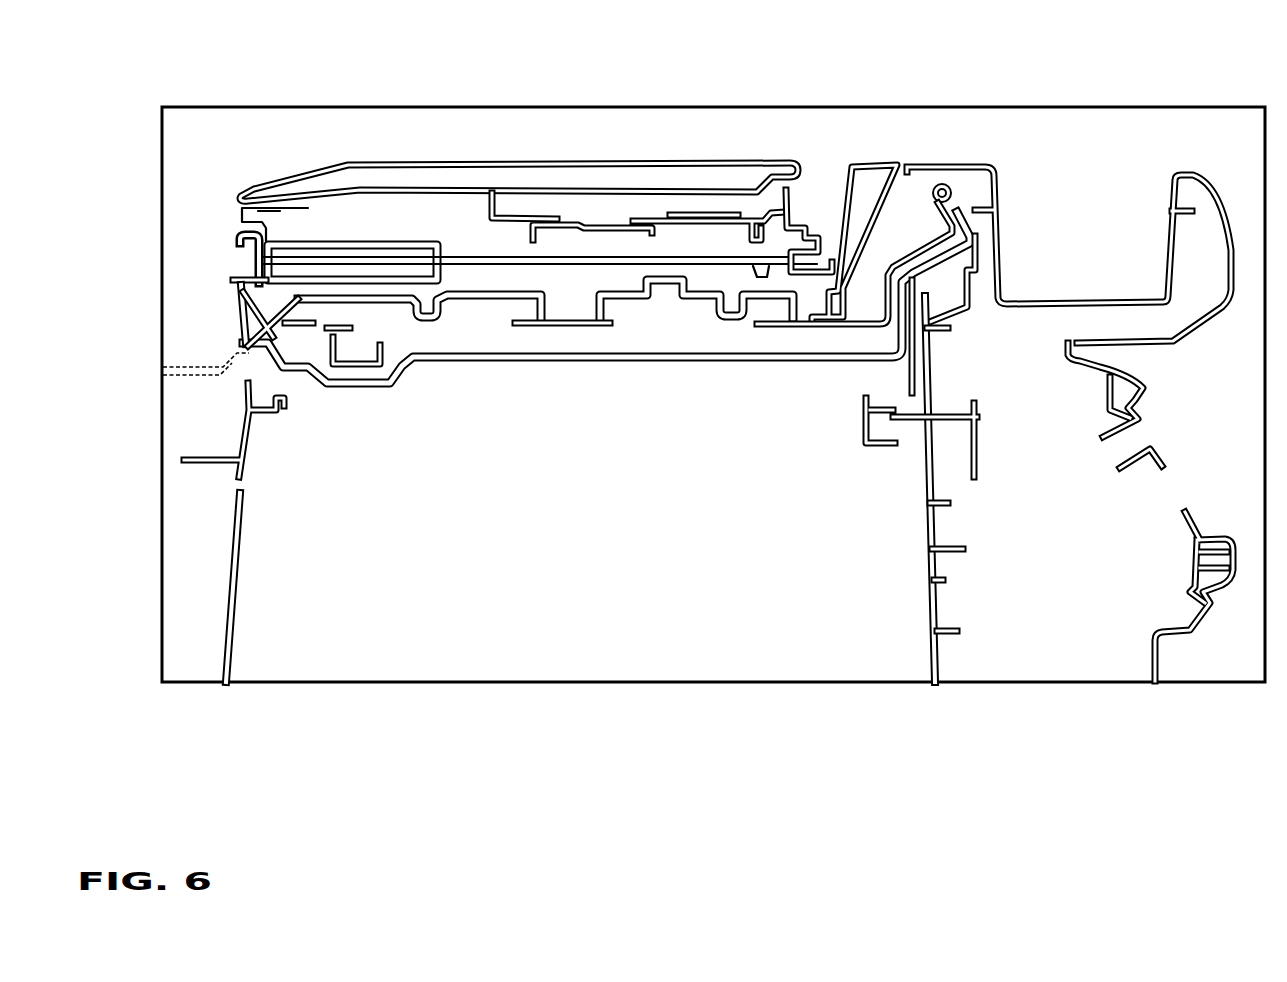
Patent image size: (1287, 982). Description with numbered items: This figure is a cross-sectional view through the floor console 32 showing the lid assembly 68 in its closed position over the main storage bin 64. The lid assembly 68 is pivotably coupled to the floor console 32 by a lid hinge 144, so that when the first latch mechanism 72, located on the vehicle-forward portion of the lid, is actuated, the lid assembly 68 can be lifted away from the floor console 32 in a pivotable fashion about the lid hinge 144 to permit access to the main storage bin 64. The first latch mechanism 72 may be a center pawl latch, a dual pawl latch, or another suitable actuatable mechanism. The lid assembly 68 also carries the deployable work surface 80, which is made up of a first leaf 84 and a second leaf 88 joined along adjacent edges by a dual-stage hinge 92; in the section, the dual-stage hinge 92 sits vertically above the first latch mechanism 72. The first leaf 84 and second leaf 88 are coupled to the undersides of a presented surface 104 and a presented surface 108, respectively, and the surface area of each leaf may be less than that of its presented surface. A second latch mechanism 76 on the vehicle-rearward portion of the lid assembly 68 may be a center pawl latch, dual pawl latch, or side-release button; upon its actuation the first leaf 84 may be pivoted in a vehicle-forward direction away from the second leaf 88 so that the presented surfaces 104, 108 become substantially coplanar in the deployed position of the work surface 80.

The floor console 32 is at (125, 130).
The main storage bin 64 is at (582, 526).
The lid assembly 68 is at (414, 150).
The first latch mechanism 72 is at (227, 323).
The second latch mechanism 76 is at (806, 212).
The work surface 80 is at (667, 238).
The first leaf 84 is at (308, 243).
The second leaf 88 is at (342, 276).
The dual-stage hinge 92 is at (243, 256).
The presented surface 104 is at (462, 253).
The presented surface 108 is at (497, 264).
The lid hinge 144 is at (942, 184).